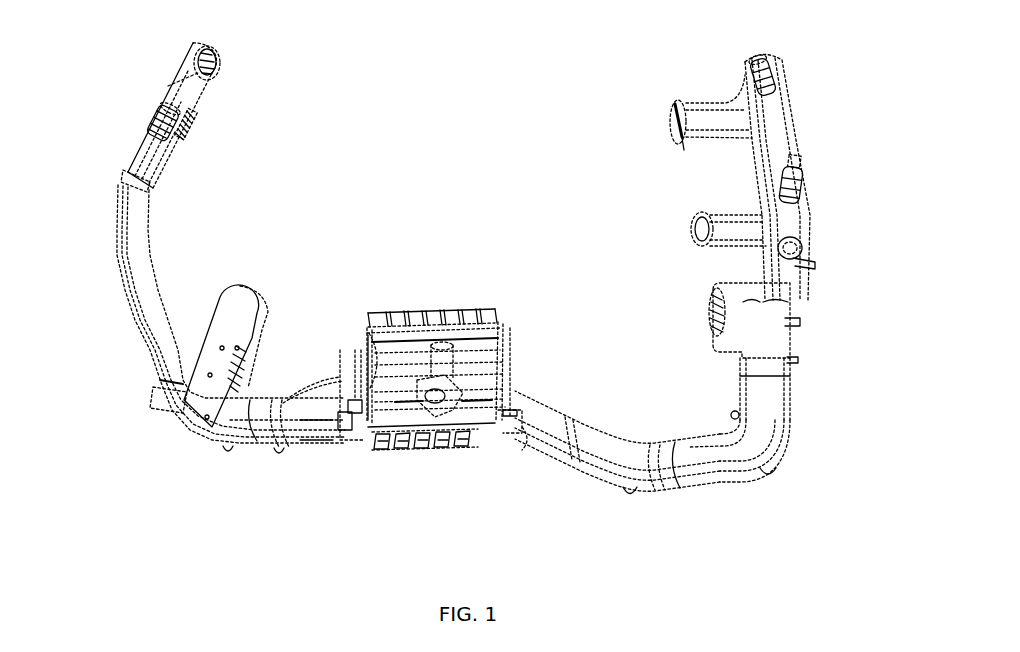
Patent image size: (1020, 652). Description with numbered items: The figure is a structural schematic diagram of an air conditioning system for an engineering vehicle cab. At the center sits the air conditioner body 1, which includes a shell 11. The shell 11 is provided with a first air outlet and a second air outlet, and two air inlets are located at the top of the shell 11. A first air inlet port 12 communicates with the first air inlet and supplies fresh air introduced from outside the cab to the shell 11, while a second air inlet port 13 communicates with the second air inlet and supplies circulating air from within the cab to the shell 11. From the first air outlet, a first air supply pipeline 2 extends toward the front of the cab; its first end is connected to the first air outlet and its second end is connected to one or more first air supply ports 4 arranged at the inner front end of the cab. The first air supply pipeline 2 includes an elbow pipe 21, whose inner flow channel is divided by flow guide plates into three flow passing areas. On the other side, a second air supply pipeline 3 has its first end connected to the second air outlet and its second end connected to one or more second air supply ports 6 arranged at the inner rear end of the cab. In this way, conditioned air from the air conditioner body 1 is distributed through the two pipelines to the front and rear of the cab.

The air conditioner body 1 is at (388, 447).
The shell 11 is at (442, 450).
The first air inlet port 12 is at (445, 392).
The second air inlet port 13 is at (432, 304).
The first air supply pipeline 2 is at (722, 485).
The elbow pipe 21 is at (766, 433).
The second air supply pipeline 3 is at (127, 290).
The first air supply port 4 is at (690, 232).
The second air supply port 6 is at (213, 72).